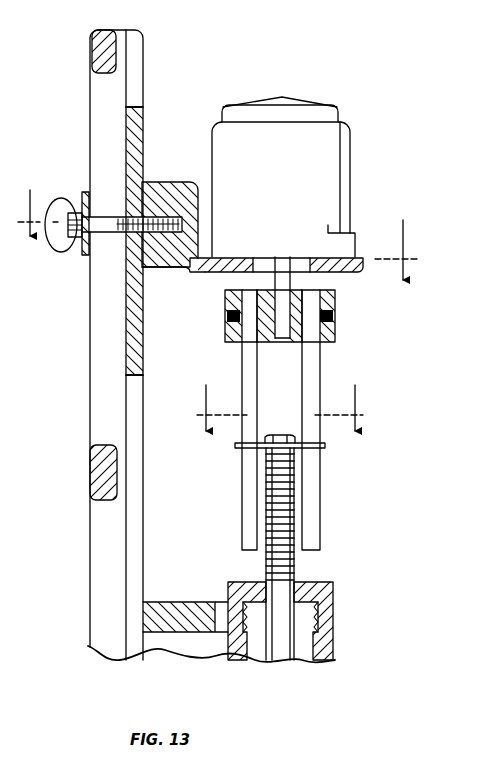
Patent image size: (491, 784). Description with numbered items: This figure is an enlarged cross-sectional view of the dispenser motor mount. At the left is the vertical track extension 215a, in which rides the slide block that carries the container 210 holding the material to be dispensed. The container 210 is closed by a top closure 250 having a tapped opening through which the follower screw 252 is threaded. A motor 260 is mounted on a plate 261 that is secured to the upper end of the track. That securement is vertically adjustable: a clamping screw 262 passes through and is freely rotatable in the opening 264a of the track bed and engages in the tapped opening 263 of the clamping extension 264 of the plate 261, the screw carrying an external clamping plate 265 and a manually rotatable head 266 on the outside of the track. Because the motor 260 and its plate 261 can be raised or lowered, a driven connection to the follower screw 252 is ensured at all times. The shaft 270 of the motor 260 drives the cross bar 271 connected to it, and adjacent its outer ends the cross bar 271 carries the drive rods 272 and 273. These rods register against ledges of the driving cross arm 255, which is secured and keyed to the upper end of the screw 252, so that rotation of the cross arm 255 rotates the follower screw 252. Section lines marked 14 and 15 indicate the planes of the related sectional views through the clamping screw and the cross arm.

The vertical track extension 215a is at (124, 46).
The tapped opening 263 is at (153, 192).
The clamping extension 264 is at (168, 266).
The opening of the track bed 264a is at (108, 232).
The clamping screw 262 is at (148, 229).
The external clamping plate 265 is at (84, 197).
The manually rotatable head 266 is at (62, 242).
The motor 260 is at (335, 173).
The plate 261 is at (355, 274).
The shaft 270 is at (277, 284).
The cross bar 271 is at (333, 338).
The drive rod 273 is at (247, 512).
The drive rod 272 is at (315, 495).
The driving cross arm 255 is at (322, 447).
The follower screw 252 is at (268, 572).
The top closure 250 is at (236, 595).
The container 210 is at (328, 622).
The section line 14 is at (219, 249).
The section line 15 is at (281, 422).